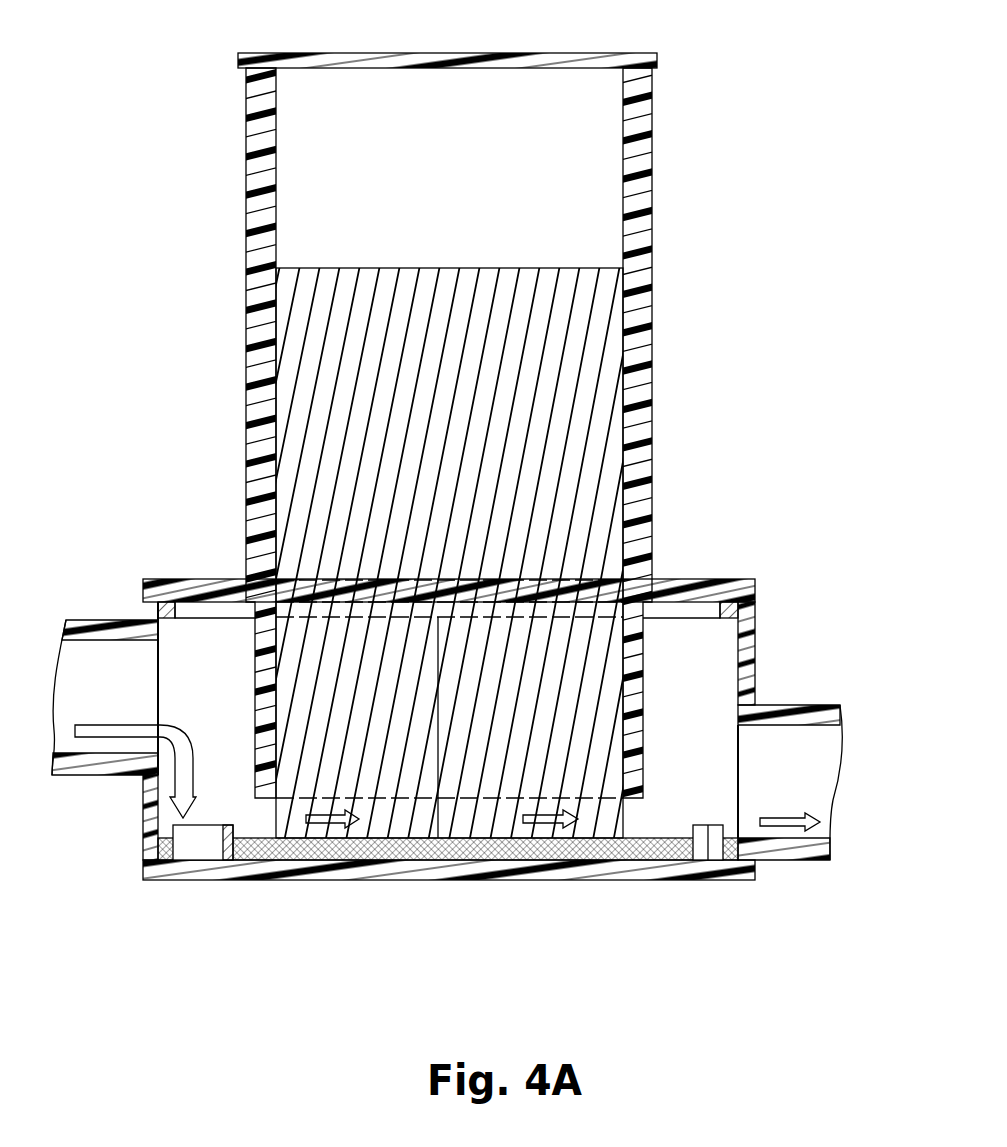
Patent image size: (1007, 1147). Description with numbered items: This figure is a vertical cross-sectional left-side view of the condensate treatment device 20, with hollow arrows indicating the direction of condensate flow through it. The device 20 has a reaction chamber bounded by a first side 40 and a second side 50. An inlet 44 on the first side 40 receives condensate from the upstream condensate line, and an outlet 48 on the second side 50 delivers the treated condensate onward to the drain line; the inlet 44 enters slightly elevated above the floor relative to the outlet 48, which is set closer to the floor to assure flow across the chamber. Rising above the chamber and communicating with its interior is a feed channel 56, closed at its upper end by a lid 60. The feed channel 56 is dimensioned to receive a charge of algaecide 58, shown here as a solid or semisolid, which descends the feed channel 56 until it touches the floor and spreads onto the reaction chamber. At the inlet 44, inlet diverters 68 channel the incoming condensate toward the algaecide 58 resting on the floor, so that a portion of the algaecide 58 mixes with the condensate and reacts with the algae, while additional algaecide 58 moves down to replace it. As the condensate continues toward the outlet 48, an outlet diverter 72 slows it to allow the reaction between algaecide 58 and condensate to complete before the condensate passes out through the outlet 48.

The device 20 is at (712, 304).
The first side 40 is at (142, 592).
The inlet 44 is at (100, 625).
The outlet 48 is at (818, 705).
The second side 50 is at (757, 607).
The feed channel 56 is at (247, 365).
The algaecide 58 is at (352, 308).
The lid 60 is at (282, 53).
The inlet diverters 68 is at (200, 823).
The outlet diverter 72 is at (700, 823).